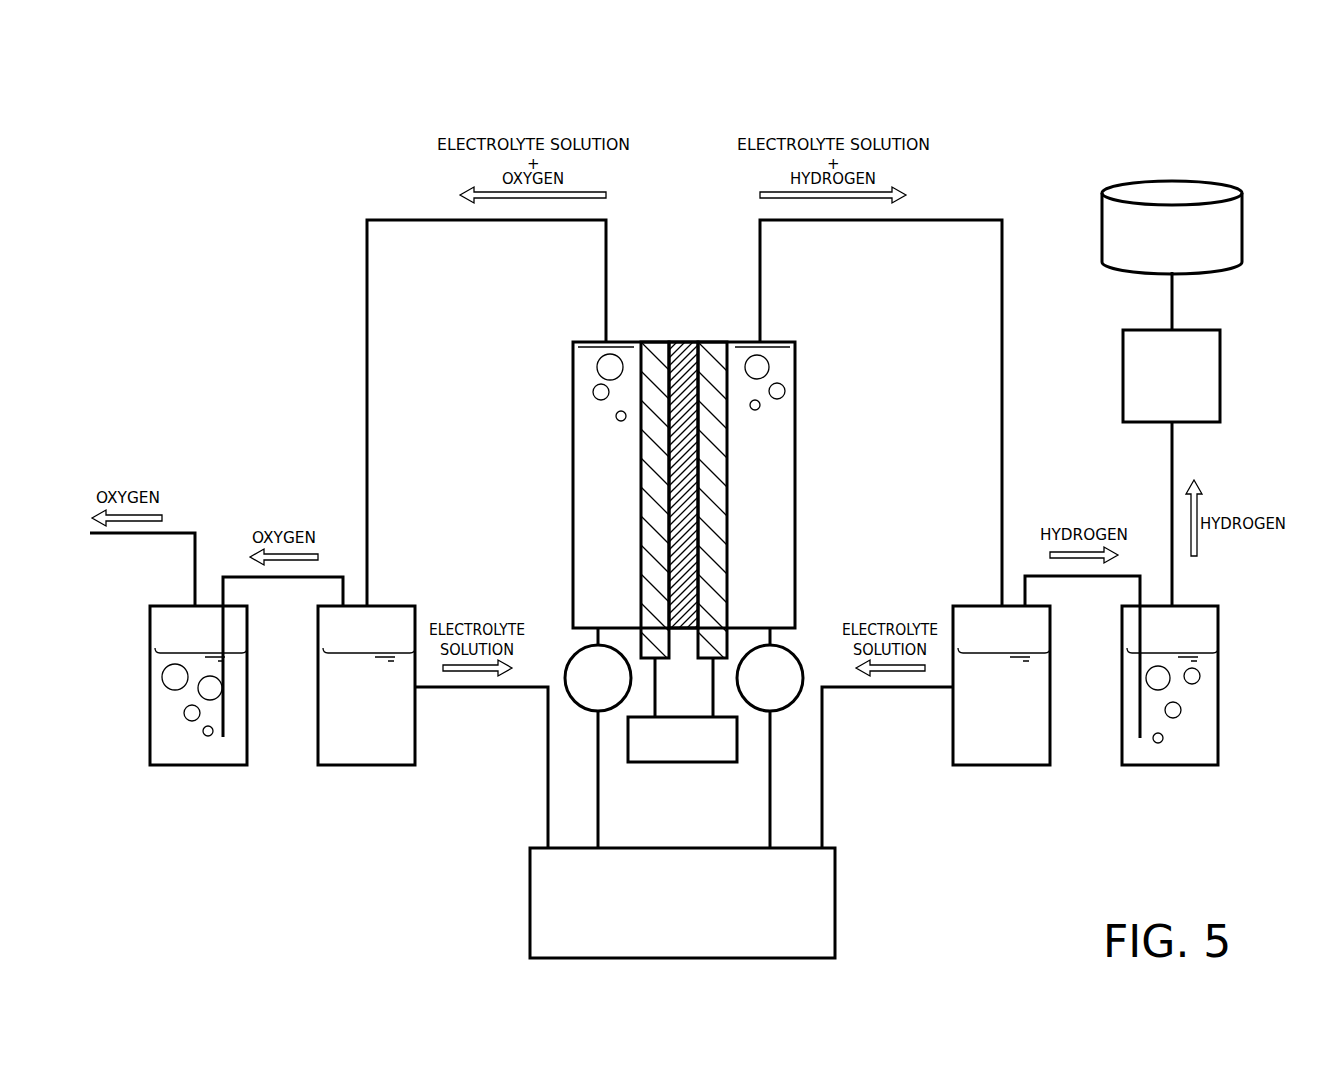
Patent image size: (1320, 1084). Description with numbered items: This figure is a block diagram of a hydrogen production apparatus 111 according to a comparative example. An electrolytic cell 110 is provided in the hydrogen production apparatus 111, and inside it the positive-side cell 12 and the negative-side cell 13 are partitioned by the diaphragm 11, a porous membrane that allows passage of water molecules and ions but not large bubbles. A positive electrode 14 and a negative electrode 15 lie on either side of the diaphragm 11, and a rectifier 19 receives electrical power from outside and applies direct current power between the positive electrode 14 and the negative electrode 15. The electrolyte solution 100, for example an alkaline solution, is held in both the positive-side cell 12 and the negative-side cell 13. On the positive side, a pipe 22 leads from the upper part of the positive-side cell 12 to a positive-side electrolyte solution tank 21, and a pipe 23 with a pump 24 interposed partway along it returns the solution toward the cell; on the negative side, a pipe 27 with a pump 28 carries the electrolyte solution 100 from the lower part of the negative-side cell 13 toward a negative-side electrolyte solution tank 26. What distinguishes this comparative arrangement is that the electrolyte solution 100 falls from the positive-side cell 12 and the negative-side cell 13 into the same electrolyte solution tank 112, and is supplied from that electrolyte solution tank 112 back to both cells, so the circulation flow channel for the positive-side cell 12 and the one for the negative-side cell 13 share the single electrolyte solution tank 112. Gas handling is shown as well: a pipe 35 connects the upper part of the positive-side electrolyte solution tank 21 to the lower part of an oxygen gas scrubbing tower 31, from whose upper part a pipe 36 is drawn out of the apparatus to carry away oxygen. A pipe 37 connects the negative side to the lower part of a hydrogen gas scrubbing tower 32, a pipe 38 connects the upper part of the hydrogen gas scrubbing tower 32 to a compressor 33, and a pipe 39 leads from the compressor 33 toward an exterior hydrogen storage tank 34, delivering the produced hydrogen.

The hydrogen production apparatus 111 is at (1200, 103).
The electrolytic cell 110 is at (789, 322).
The diaphragm 11 is at (683, 352).
The positive-side cell 12 is at (586, 443).
The negative-side cell 13 is at (780, 443).
The positive electrode 14 is at (655, 352).
The negative electrode 15 is at (711, 352).
The rectifier 19 is at (685, 765).
The positive-side electrolyte solution tank 21 is at (341, 780).
The pipe 22 is at (365, 357).
The pipe 23 is at (600, 793).
The pump 24 is at (576, 652).
The negative-side electrolyte solution tank 26 is at (1026, 780).
The pipe 27 is at (770, 793).
The pump 28 is at (792, 652).
The oxygen gas scrubbing tower 31 is at (180, 780).
The hydrogen gas scrubbing tower 32 is at (1203, 780).
The compressor 33 is at (1221, 378).
The hydrogen storage tank 34 is at (1243, 232).
The pipe 35 is at (283, 583).
The pipe 36 is at (115, 538).
The pipe 37 is at (1084, 583).
The pipe 38 is at (1170, 463).
The pipe 39 is at (1170, 297).
The electrolyte solution 100 is at (586, 528).
The electrolyte solution tank 112 is at (836, 870).